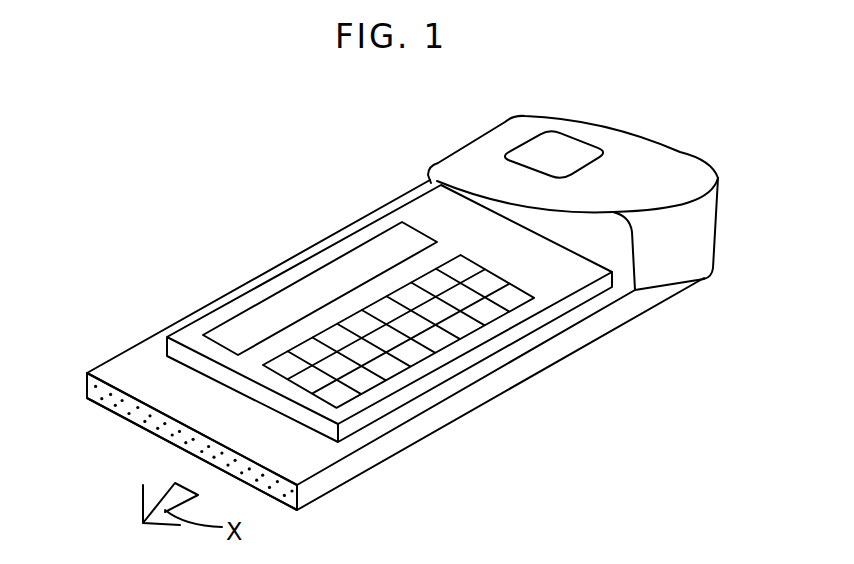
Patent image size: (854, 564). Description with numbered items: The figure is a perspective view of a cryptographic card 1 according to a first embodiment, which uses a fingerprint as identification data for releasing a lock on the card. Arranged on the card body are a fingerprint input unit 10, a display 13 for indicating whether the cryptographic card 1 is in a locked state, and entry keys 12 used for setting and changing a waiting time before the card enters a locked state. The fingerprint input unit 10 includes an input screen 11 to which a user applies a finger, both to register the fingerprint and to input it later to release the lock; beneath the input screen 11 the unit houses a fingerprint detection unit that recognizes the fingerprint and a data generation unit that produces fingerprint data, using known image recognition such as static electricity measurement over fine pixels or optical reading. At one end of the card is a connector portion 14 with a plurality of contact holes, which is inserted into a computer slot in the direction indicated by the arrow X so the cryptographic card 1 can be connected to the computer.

The cryptographic card 1 is at (382, 123).
The fingerprint input unit 10 is at (667, 162).
The input screen 11 is at (567, 142).
The entry keys 12 is at (487, 318).
The display 13 is at (330, 277).
The connector portion 14 is at (102, 423).